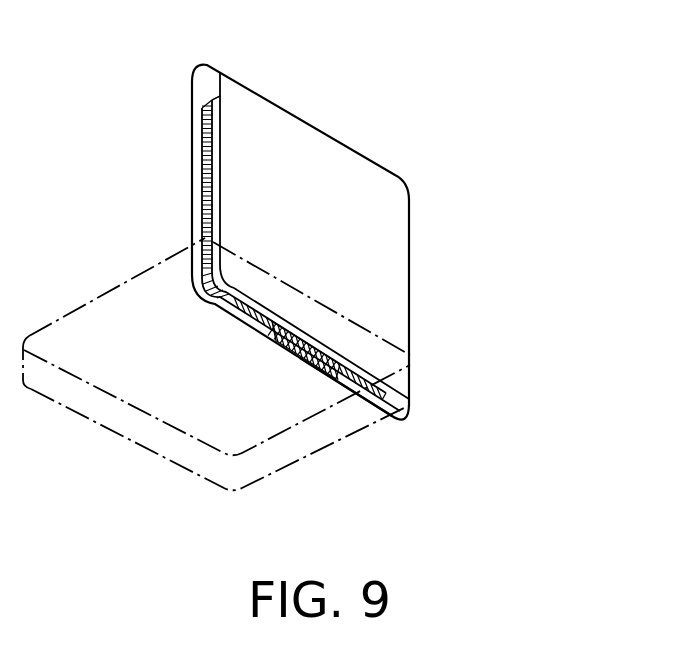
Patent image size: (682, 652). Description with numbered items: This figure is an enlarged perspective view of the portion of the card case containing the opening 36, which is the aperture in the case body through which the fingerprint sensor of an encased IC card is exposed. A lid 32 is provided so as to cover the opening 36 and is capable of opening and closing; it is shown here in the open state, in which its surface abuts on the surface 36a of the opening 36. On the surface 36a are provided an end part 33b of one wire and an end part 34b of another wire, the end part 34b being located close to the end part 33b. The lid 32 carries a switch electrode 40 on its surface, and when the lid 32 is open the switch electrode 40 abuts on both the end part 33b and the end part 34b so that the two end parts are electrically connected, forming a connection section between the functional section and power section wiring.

The lid 32 is at (320, 450).
The opening 36 is at (299, 132).
The surface of the opening 36a is at (389, 400).
The end part of wire 34b is at (258, 318).
The end part of wire 33b is at (327, 372).
The switch electrode 40 is at (308, 344).